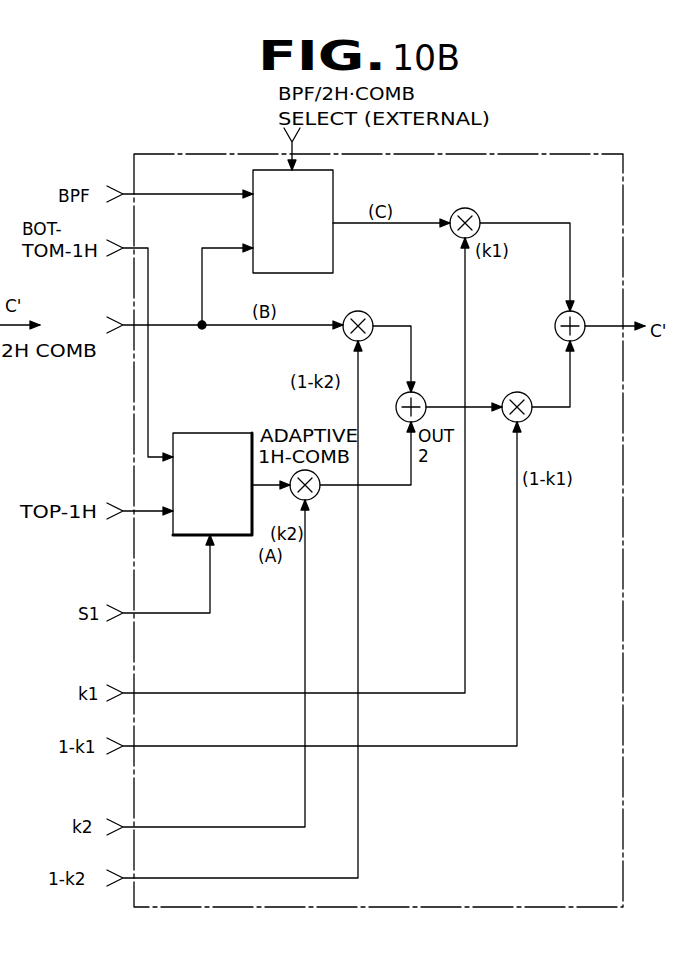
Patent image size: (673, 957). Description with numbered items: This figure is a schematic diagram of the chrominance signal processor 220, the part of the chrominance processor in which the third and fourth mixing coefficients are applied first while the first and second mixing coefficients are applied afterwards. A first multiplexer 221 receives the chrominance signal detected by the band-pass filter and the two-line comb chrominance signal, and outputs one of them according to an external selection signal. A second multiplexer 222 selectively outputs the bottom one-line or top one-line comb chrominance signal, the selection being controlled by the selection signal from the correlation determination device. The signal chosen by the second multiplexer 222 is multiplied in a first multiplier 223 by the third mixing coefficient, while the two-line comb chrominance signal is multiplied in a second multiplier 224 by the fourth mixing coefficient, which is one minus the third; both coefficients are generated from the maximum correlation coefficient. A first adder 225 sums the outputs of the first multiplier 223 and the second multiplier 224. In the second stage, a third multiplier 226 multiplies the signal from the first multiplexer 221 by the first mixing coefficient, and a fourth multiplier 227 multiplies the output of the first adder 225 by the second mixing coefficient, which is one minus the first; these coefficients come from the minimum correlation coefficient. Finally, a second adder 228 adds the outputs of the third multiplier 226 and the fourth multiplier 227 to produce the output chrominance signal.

The chrominance signal processor 220 is at (530, 905).
The first multiplexer 221 is at (334, 172).
The second multiplexer 222 is at (252, 536).
The first multiplier 223 is at (314, 497).
The second multiplier 224 is at (366, 311).
The first adder 225 is at (416, 393).
The third multiplier 226 is at (472, 209).
The fourth multiplier 227 is at (522, 393).
The second adder 228 is at (578, 312).